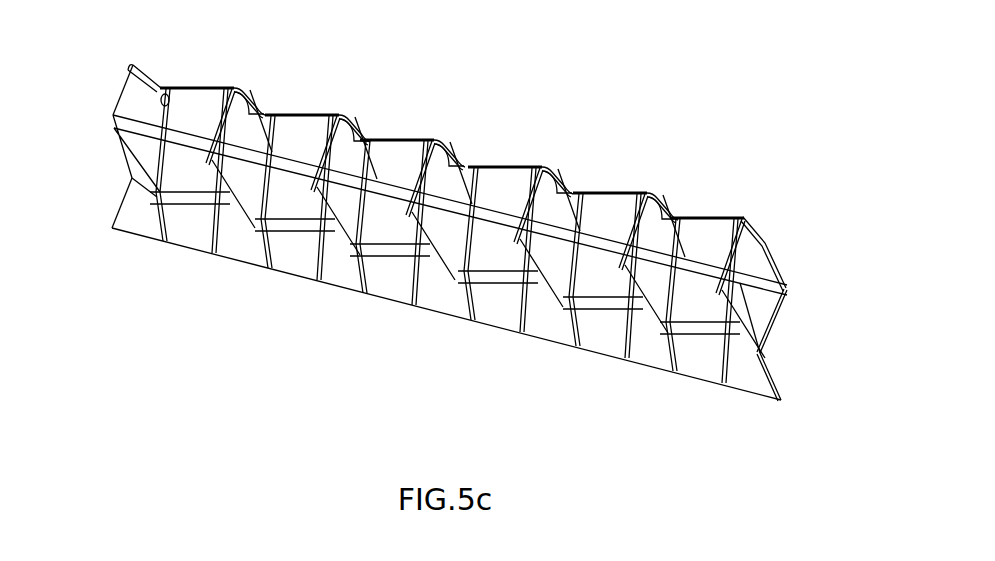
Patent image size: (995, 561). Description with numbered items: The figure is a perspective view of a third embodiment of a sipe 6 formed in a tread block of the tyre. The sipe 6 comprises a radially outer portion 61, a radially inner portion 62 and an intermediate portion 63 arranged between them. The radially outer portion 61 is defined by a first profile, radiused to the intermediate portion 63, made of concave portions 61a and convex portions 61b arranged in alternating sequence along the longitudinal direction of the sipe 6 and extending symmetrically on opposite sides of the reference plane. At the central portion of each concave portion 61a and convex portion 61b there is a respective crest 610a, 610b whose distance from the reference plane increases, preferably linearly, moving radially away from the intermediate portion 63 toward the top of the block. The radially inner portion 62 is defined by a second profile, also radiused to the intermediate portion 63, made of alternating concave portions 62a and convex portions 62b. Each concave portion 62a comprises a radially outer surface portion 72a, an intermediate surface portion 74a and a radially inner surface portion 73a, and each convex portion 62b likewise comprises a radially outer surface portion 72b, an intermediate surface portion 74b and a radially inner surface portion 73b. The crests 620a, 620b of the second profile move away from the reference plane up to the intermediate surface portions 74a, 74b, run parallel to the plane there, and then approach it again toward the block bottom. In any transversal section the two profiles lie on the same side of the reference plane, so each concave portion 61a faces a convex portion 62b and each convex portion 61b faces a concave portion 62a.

The sipe 6 is at (716, 95).
The radially outer portion 61 is at (762, 221).
The concave portion 61a is at (243, 86).
The convex portion 61b is at (165, 80).
The crest 610a is at (240, 108).
The crest 610b is at (170, 97).
The radially inner portion 62 is at (797, 382).
The concave portion 62a is at (330, 236).
The convex portion 62b is at (250, 233).
The crest 620a is at (318, 202).
The crest 620b is at (256, 230).
The intermediate portion 63 is at (775, 331).
The radially outer surface portion 72a is at (108, 126).
The intermediate surface portion 74a is at (126, 174).
The radially inner surface portion 73a is at (110, 227).
The radially outer surface portion 72b is at (622, 322).
The intermediate surface portion 74b is at (648, 340).
The radially inner surface portion 73b is at (685, 366).